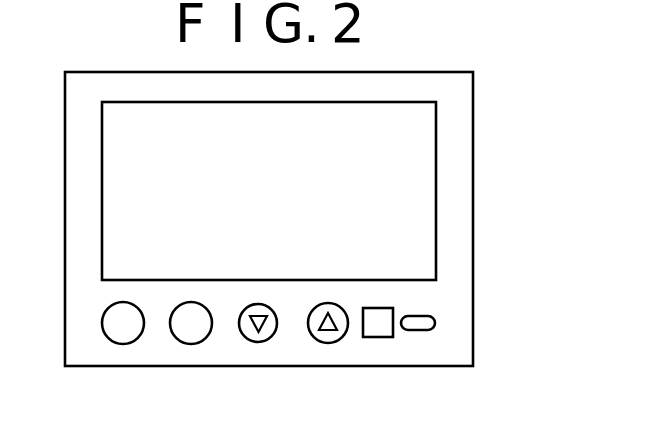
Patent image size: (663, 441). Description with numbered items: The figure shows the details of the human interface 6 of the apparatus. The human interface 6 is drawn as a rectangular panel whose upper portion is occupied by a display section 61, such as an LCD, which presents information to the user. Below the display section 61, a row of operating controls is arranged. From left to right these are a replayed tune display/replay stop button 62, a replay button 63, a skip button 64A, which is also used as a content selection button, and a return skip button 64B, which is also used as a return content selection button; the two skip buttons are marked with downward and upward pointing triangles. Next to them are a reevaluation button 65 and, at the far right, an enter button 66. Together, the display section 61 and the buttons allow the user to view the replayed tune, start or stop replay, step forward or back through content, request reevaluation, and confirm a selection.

The human interface 6 is at (473, 100).
The display section 61 is at (436, 163).
The replayed tune display/replay stop button 62 is at (122, 344).
The replay button 63 is at (191, 344).
The skip button 64A is at (257, 342).
The return skip button 64B is at (327, 343).
The reevaluation button 65 is at (378, 337).
The enter button 66 is at (418, 330).